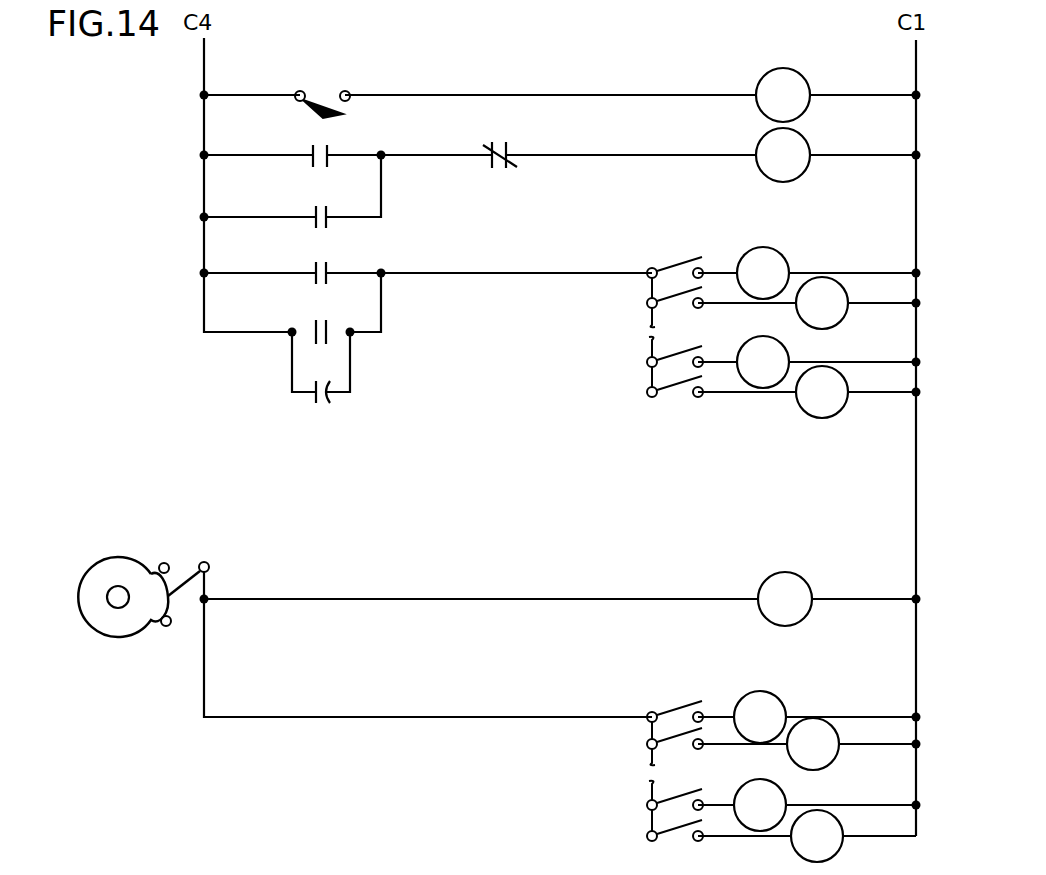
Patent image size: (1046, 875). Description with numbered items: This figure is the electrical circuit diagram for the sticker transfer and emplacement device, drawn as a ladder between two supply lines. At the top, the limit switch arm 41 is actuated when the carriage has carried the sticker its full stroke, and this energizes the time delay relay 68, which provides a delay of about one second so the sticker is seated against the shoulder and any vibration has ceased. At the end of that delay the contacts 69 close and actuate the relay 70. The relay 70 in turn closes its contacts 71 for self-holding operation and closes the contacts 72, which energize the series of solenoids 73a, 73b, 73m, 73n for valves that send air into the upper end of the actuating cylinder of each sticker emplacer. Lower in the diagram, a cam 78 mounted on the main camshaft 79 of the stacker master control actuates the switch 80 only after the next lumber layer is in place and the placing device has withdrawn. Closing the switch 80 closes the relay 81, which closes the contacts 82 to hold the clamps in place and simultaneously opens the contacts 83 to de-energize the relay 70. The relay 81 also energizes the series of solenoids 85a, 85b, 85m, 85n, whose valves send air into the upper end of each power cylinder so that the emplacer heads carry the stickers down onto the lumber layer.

The switch arm 41 is at (323, 96).
The time delay relay 68 is at (803, 78).
The contacts 69 is at (315, 168).
The relay 70 is at (803, 138).
The contacts 71 is at (323, 206).
The contacts 72 is at (323, 262).
The solenoid 73a is at (788, 232).
The solenoid 73b is at (843, 290).
The solenoid 73m is at (786, 352).
The solenoid 73n is at (831, 414).
The cam 78 is at (112, 567).
The main camshaft 79 is at (118, 600).
The switch 80 is at (187, 572).
The relay 81 is at (808, 580).
The contacts 82 is at (323, 320).
The contacts 83 is at (505, 140).
The solenoid 85a is at (784, 700).
The solenoid 85b is at (836, 733).
The solenoid 85m is at (786, 796).
The solenoid 85n is at (832, 855).